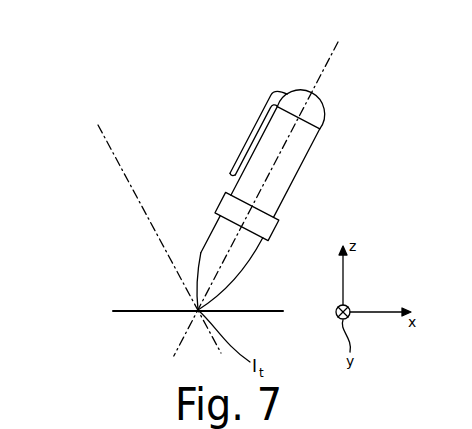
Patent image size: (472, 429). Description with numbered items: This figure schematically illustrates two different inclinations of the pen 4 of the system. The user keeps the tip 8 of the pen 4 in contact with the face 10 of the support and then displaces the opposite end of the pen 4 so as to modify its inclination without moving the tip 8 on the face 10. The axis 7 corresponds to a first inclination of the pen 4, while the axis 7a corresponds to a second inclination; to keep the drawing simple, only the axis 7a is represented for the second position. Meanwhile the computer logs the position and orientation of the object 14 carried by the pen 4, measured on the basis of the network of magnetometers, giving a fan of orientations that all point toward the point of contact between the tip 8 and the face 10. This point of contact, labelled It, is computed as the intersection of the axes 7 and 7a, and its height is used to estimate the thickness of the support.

The axis 7 is at (327, 62).
The axis 7a is at (146, 214).
The pen 4 is at (283, 200).
The object 14 is at (283, 225).
The tip 8 is at (198, 310).
The face 10 is at (133, 310).